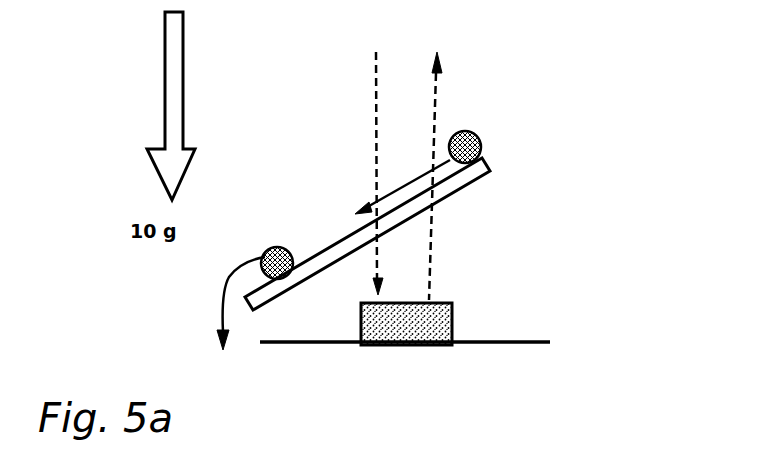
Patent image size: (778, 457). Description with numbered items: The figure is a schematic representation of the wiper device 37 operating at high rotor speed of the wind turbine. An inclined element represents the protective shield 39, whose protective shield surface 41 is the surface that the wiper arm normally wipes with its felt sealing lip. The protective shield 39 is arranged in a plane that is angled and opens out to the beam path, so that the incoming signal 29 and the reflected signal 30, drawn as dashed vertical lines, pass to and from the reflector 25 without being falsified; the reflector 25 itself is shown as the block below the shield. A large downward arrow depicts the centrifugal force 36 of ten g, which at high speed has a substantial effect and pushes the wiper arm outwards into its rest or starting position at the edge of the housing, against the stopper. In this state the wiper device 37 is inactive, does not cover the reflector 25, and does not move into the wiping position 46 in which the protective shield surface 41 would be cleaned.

The reflector 25 is at (400, 331).
The incoming signal 29 is at (376, 97).
The reflected signal 30 is at (437, 101).
The centrifugal force 36 is at (187, 62).
The wiper device 37 is at (510, 138).
The protective shield 39 is at (462, 178).
The protective shield surface 41 is at (318, 250).
The wiping position 46 is at (464, 399).